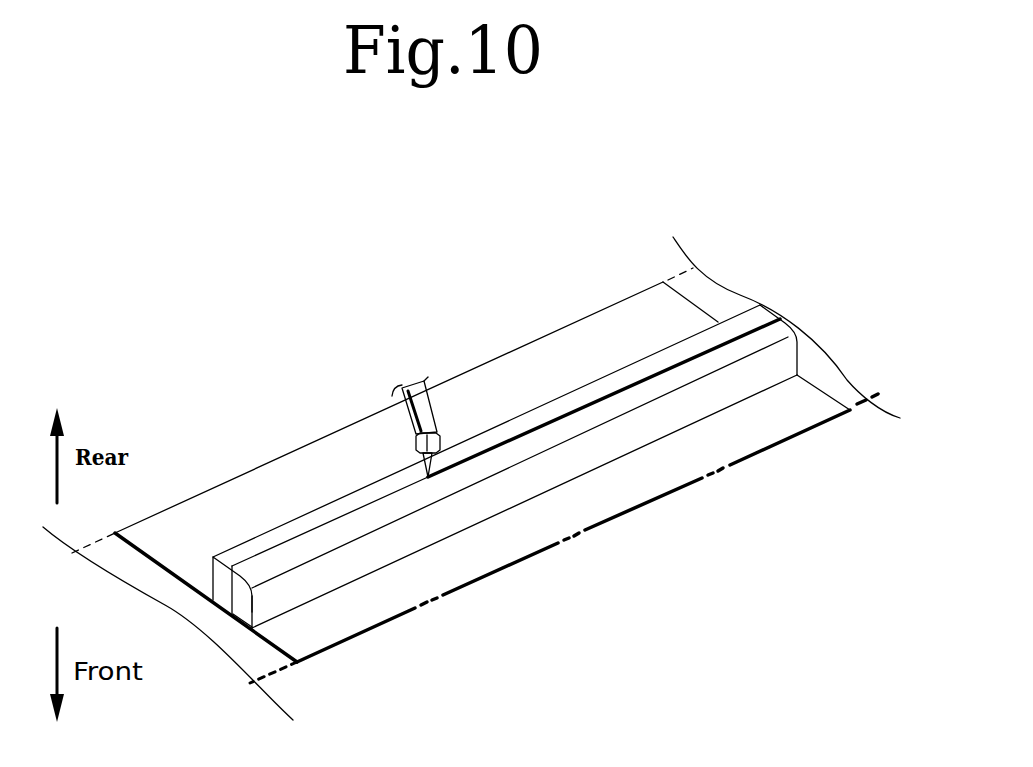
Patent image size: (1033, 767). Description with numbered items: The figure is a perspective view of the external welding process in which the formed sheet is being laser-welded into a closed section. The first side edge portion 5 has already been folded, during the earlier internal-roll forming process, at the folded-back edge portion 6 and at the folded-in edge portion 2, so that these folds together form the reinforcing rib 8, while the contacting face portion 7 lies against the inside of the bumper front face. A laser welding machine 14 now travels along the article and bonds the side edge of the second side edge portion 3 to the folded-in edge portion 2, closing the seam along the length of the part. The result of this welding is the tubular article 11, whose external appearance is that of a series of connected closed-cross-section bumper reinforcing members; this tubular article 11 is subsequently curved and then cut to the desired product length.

The folded-in edge portion 2 is at (393, 497).
The second side edge portion 3 is at (353, 525).
The first side edge portion 5 is at (256, 548).
The folded-back edge portion 6 is at (252, 606).
The contacting face portion 7 is at (250, 607).
The reinforcing rib 8 is at (230, 590).
The tubular article 11 is at (514, 406).
The laser welding machine 14 is at (415, 383).